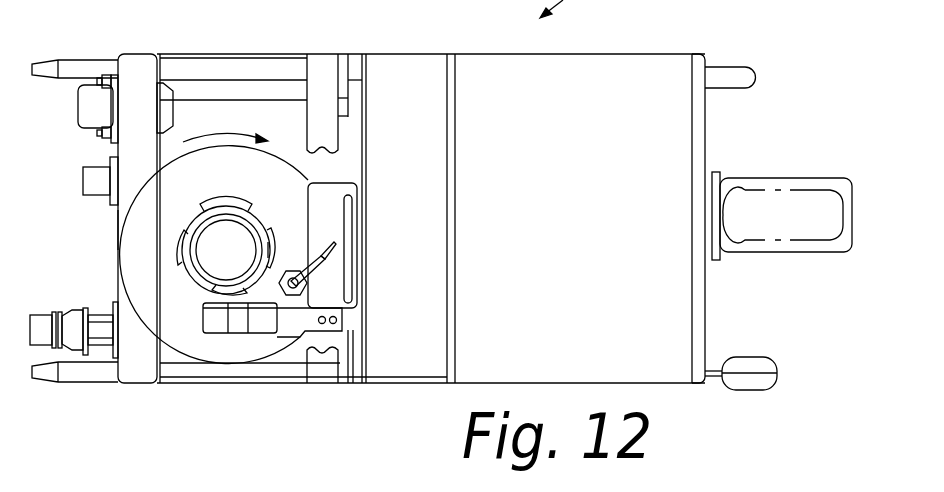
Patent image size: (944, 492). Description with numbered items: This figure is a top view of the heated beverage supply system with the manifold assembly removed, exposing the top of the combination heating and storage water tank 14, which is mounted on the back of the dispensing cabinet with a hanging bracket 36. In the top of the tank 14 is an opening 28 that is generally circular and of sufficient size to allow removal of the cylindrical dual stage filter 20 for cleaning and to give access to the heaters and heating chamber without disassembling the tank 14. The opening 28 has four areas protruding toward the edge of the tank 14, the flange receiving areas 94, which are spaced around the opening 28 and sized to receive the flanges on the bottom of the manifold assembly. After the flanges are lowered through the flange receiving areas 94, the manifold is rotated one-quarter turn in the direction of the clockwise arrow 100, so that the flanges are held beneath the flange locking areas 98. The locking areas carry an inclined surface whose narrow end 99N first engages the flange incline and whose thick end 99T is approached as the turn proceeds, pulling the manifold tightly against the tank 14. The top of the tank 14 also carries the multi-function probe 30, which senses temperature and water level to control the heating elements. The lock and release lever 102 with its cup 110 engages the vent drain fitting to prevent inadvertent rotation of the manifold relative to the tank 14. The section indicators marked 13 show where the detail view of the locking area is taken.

The combination heating and storage water tank 14 is at (157, 187).
The cylindrical dual stage filter 20 is at (208, 288).
The opening 28 is at (120, 229).
The multi-function probe 30 is at (322, 258).
The hanging bracket 36 is at (325, 200).
The flange receiving areas 94 is at (238, 207).
The flange locking areas 98 is at (195, 283).
The narrow end of flange locking area inclined surface 99N is at (196, 222).
The thick end of flange locking area inclined surface 99T is at (218, 209).
The clockwise arrow 100 is at (307, 115).
The lock and release lever 102 is at (263, 323).
The cup 110 is at (228, 333).
The section line for FIG. 13 is at (210, 221).